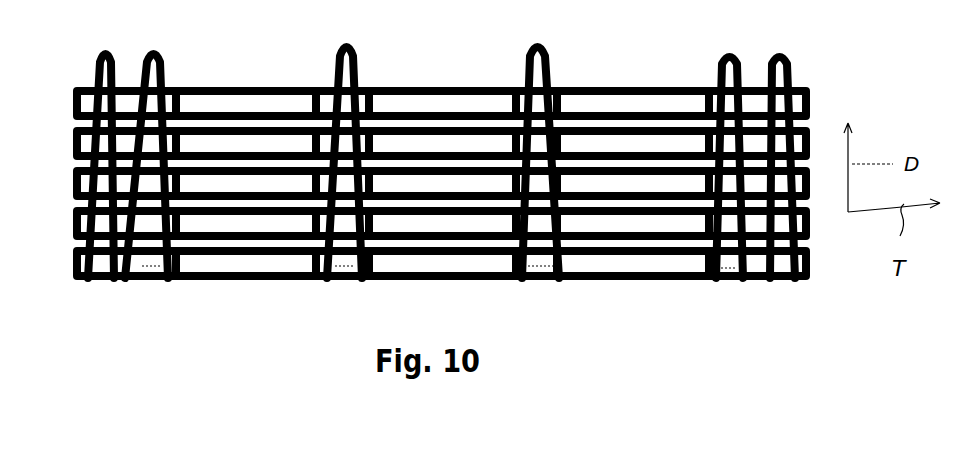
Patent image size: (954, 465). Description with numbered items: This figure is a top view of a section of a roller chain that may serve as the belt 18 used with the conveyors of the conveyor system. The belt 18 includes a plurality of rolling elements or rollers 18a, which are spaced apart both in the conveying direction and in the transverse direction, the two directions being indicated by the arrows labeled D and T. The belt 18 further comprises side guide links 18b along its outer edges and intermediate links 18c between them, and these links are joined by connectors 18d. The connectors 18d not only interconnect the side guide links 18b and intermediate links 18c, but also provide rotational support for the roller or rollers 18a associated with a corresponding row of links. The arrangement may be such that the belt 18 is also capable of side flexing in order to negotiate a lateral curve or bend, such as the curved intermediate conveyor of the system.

The belt 18 is at (829, 74).
The rollers 18a is at (655, 88).
The side guide links 18b is at (785, 57).
The intermediate links 18c is at (550, 72).
The connectors 18d is at (732, 274).